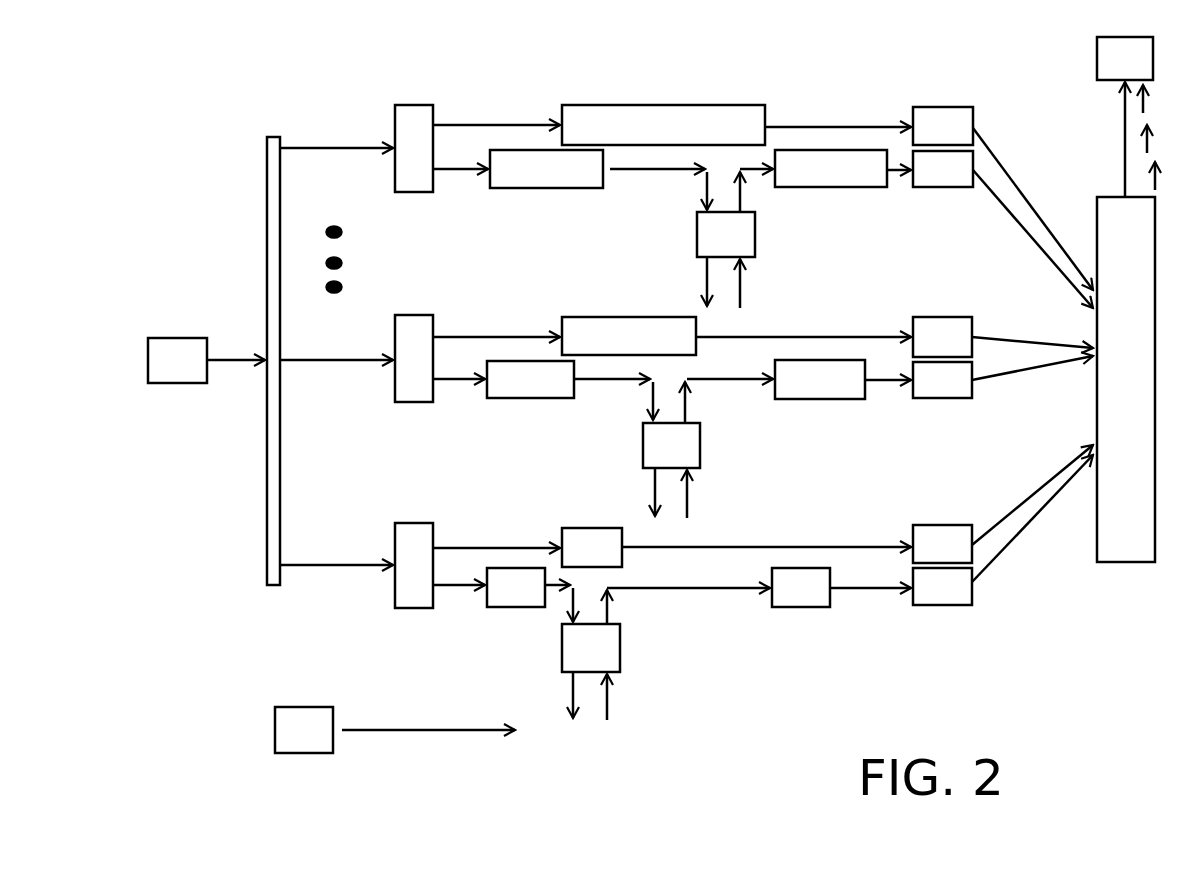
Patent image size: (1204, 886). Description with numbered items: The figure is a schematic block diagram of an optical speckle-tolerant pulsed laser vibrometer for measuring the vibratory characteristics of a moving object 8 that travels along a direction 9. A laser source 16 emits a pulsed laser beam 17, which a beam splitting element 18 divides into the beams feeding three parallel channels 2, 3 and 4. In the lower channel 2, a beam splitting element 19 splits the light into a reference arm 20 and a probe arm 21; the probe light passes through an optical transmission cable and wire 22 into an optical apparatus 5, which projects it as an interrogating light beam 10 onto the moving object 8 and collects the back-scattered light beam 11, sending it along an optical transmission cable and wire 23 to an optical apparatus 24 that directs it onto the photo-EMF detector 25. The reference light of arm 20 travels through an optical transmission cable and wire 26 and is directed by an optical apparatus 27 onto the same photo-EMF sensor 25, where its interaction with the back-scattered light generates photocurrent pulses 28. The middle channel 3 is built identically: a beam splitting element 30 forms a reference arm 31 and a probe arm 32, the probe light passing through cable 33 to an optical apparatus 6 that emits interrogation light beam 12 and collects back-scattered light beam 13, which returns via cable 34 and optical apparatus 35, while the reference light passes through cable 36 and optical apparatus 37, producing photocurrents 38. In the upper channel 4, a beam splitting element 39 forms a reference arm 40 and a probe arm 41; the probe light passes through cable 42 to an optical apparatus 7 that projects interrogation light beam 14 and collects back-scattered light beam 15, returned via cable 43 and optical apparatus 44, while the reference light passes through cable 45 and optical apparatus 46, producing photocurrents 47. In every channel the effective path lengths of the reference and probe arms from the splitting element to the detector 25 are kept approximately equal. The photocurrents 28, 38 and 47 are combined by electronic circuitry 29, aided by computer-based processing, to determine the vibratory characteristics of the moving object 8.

The channel 2 is at (336, 551).
The channel 3 is at (336, 377).
The channel 4 is at (336, 166).
The optical apparatus 5 is at (591, 648).
The optical apparatus 6 is at (671, 445).
The optical apparatus 7 is at (726, 234).
The moving object 8 is at (304, 730).
The direction 9 is at (428, 720).
The interrogating light beam 10 is at (555, 695).
The back-scattered light beam 11 is at (628, 697).
The interrogation light beam 12 is at (625, 492).
The back-scattered light beam 13 is at (709, 494).
The interrogation light beam 14 is at (689, 281).
The back-scattered light beam 15 is at (761, 283).
The laser source 16 is at (177, 360).
The laser beam 17 is at (236, 344).
The beam splitting element 18 is at (283, 347).
The beam splitting element 19 is at (414, 565).
The reference arm 20 is at (496, 533).
The probe arm 21 is at (459, 604).
The optical transmission cable and wire 22 is at (516, 587).
The optical transmission cable and wire 23 is at (801, 587).
The optical apparatus 24 is at (942, 586).
The photo-EMF detector 25 is at (1126, 379).
The optical transmission cable and wire 26 is at (592, 547).
The optical apparatus 27 is at (942, 544).
The photocurrent pulses 28 is at (1167, 101).
The electronic circuitry 29 is at (1125, 58).
The beam splitting element 30 is at (414, 358).
The reference arm 31 is at (496, 322).
The probe arm 32 is at (459, 361).
The optical transmission cable and wire 33 is at (530, 379).
The optical transmission cable and wire 34 is at (820, 379).
The optical apparatus 35 is at (942, 380).
The optical transmission cable and wire 36 is at (629, 336).
The optical apparatus 37 is at (942, 337).
The photocurrents 38 is at (1171, 142).
The beam splitting element 39 is at (414, 148).
The reference arm 40 is at (496, 111).
The probe arm 41 is at (460, 150).
The optical transmission cable and wire 42 is at (546, 169).
The optical transmission cable and wire 43 is at (831, 168).
The optical apparatus 44 is at (943, 169).
The optical transmission cable and wire 45 is at (663, 125).
The optical apparatus 46 is at (943, 126).
The photocurrents 47 is at (1179, 180).